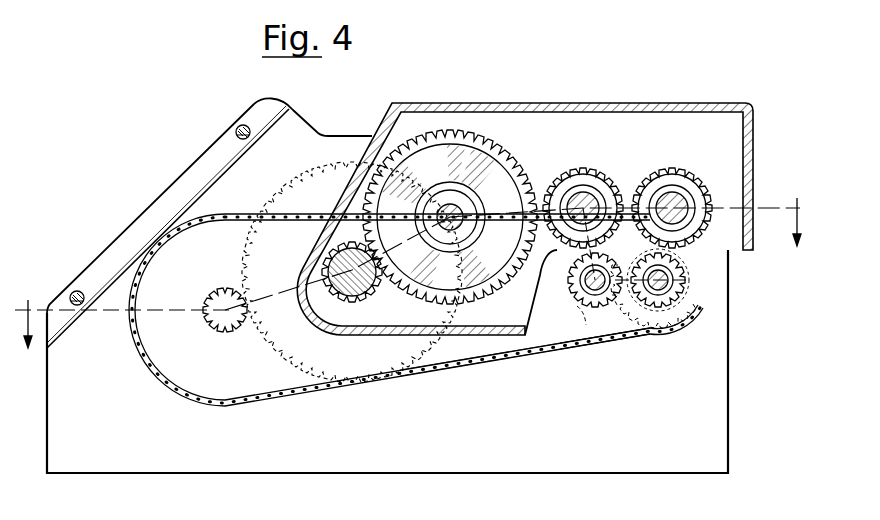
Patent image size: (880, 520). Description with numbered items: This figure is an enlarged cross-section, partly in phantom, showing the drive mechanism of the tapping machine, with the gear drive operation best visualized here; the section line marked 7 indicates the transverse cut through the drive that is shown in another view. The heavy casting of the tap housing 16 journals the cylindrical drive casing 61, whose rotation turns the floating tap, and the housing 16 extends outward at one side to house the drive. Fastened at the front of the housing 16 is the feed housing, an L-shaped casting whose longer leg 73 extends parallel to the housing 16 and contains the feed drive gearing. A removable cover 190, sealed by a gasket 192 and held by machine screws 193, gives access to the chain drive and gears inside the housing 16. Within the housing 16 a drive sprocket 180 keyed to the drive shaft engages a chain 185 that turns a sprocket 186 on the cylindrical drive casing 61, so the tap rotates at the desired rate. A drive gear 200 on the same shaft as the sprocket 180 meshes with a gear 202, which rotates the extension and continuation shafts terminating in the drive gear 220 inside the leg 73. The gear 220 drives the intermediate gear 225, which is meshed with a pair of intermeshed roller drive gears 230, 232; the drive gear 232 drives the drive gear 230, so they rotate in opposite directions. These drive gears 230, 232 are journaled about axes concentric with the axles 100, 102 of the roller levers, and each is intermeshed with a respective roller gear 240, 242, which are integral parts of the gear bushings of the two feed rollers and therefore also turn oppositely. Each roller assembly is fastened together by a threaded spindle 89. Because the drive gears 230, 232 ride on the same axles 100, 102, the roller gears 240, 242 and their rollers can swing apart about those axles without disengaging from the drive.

The tap housing 16 is at (630, 447).
The longer leg of feed housing 73 is at (648, 104).
The threaded spindle 89 is at (578, 287).
The axle 100 is at (670, 222).
The axle 102 is at (588, 220).
The cylindrical drive casing 61 is at (627, 321).
The drive sprocket 180 is at (416, 310).
The chain 185 is at (523, 347).
The sprocket 186 is at (591, 338).
The removable cover 190 is at (150, 216).
The gasket 192 is at (218, 177).
The machine screws 193 is at (77, 291).
The drive gear 200 is at (226, 328).
The gear 202 is at (300, 340).
The drive gear 220 is at (367, 287).
The intermediate gear 225 is at (452, 280).
The drive gear 230 is at (672, 169).
The drive gear 232 is at (561, 171).
The roller gear 240 is at (672, 313).
The roller gear 242 is at (620, 293).
The section line 7- 7 is at (410, 291).